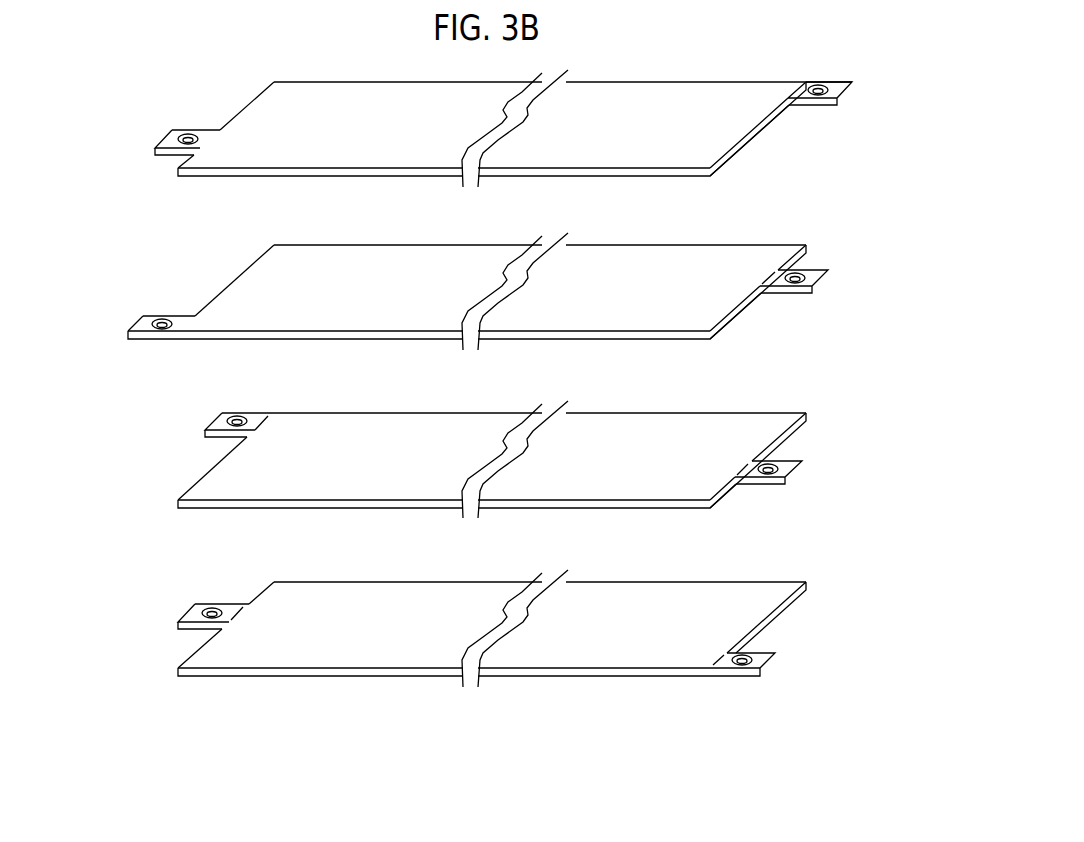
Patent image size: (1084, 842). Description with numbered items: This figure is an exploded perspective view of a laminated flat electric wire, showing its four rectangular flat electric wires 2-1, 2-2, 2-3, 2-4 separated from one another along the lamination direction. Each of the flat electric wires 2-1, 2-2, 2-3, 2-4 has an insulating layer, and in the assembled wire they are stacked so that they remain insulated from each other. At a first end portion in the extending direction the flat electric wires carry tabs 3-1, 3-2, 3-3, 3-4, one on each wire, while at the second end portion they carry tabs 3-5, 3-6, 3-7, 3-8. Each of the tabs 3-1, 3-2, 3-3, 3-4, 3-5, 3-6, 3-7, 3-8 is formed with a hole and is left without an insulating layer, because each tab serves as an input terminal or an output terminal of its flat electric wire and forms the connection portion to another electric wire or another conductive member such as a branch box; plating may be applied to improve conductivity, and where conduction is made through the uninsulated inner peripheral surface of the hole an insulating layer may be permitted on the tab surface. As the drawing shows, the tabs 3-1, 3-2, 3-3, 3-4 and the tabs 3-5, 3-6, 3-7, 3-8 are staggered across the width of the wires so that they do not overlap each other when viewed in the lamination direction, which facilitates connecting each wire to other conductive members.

The flat electric wire 2-1 is at (323, 172).
The flat electric wire 2-2 is at (327, 335).
The flat electric wire 2-3 is at (327, 505).
The flat electric wire 2-4 is at (327, 672).
The tab 3-1 is at (842, 100).
The tab 3-2 is at (822, 283).
The tab 3-3 is at (794, 474).
The tab 3-4 is at (768, 669).
The tab 3-5 is at (175, 132).
The tab 3-6 is at (140, 318).
The tab 3-7 is at (216, 417).
The tab 3-8 is at (192, 605).